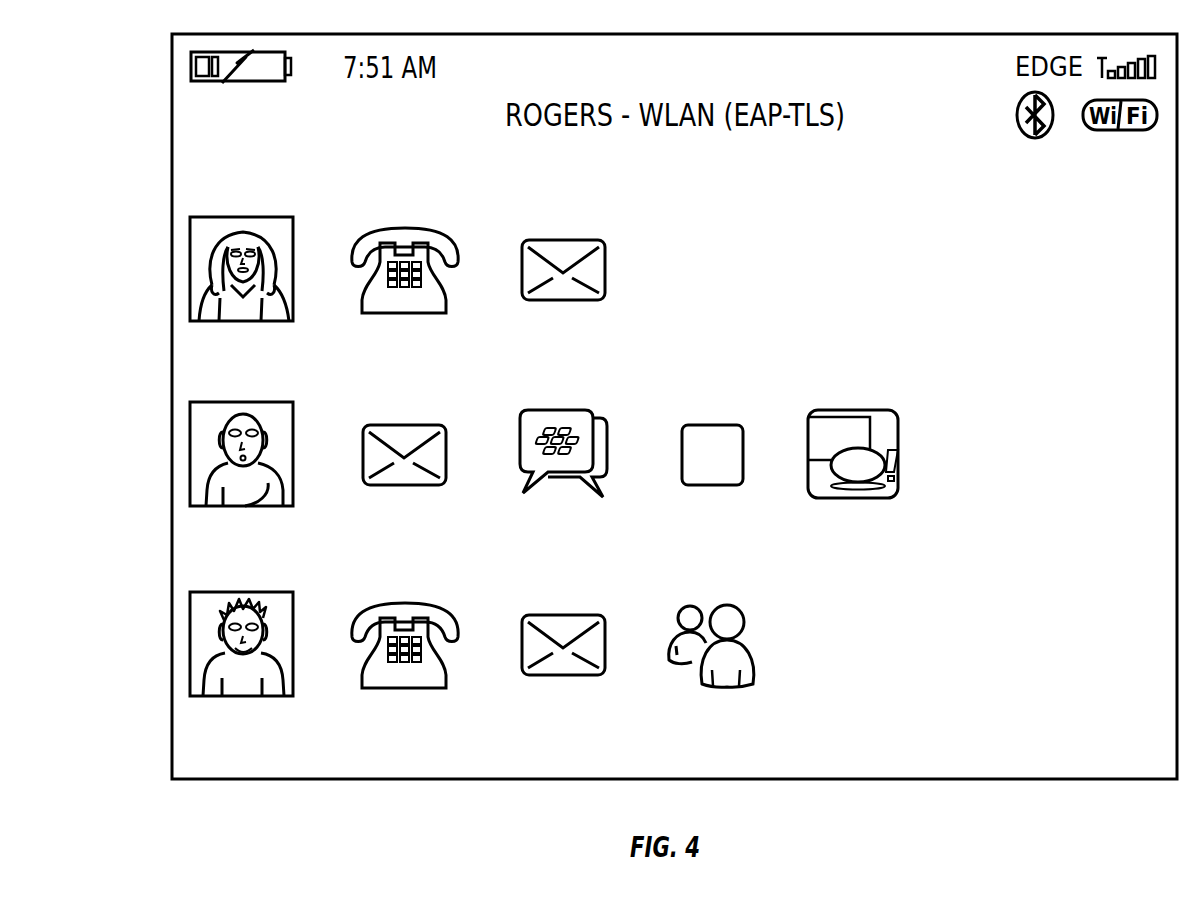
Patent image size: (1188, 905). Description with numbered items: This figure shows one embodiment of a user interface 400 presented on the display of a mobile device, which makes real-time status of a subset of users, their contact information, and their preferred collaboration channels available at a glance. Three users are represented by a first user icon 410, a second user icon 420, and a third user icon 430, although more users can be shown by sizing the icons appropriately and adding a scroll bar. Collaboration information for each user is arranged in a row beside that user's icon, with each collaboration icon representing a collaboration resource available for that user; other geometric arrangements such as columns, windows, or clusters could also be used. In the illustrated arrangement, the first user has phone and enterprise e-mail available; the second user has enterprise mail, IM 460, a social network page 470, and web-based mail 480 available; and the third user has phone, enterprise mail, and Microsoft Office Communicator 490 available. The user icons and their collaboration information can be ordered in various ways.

The interface 400 is at (692, 79).
The first user icon 410 is at (251, 244).
The second user icon 420 is at (251, 429).
The third user icon 430 is at (251, 619).
The IM 460 is at (579, 425).
The social network page 470 is at (737, 419).
The web-based mail 480 is at (868, 425).
The Microsoft Office Communicator 490 is at (731, 615).